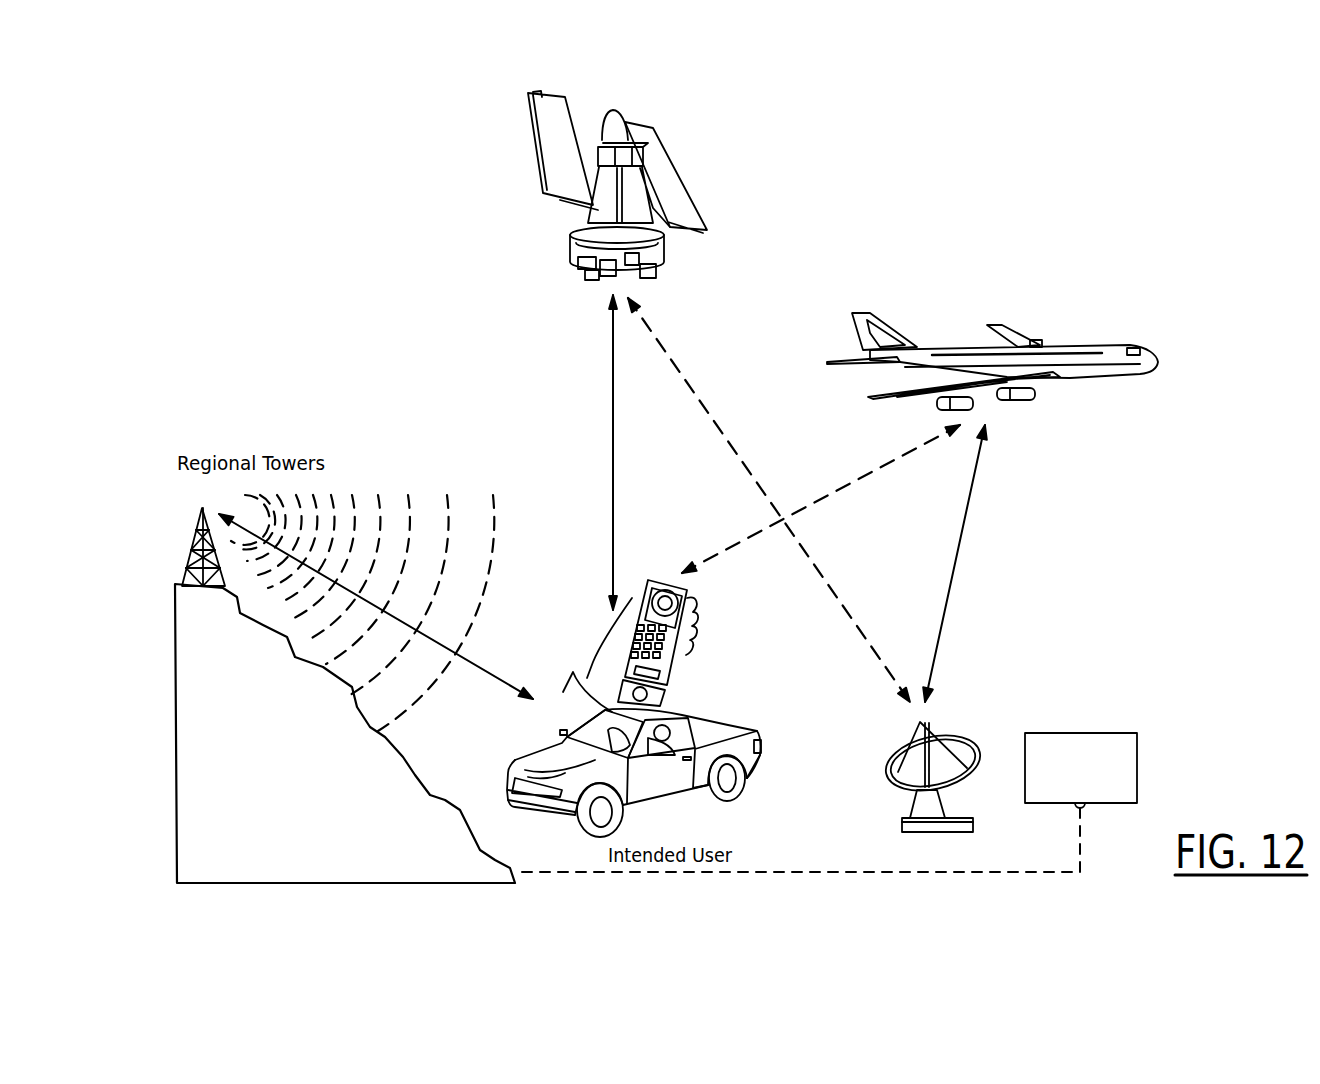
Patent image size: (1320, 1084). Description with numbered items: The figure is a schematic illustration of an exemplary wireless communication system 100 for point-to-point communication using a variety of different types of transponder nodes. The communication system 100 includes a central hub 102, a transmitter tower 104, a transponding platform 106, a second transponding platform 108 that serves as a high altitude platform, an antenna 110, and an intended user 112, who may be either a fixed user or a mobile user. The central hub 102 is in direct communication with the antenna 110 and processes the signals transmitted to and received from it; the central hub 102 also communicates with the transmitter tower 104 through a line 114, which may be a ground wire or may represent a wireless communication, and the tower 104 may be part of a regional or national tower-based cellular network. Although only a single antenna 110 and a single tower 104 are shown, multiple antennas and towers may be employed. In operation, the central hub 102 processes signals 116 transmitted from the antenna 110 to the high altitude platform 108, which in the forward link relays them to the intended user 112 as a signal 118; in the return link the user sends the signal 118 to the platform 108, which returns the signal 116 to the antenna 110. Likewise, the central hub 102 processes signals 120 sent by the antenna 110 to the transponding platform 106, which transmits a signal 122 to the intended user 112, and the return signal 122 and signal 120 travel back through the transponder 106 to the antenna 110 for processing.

The communication system 100 is at (900, 140).
The central hub 102 is at (1090, 733).
The transmitter tower 104 is at (193, 540).
The transponding platform 106 is at (617, 112).
The transponding platform 108 is at (943, 347).
The antenna 110 is at (900, 760).
The intended user 112 is at (690, 595).
The line 114 is at (810, 872).
The signals 116 is at (969, 503).
The signal 118 is at (880, 468).
The signals 120 is at (667, 363).
The signal 122 is at (612, 372).